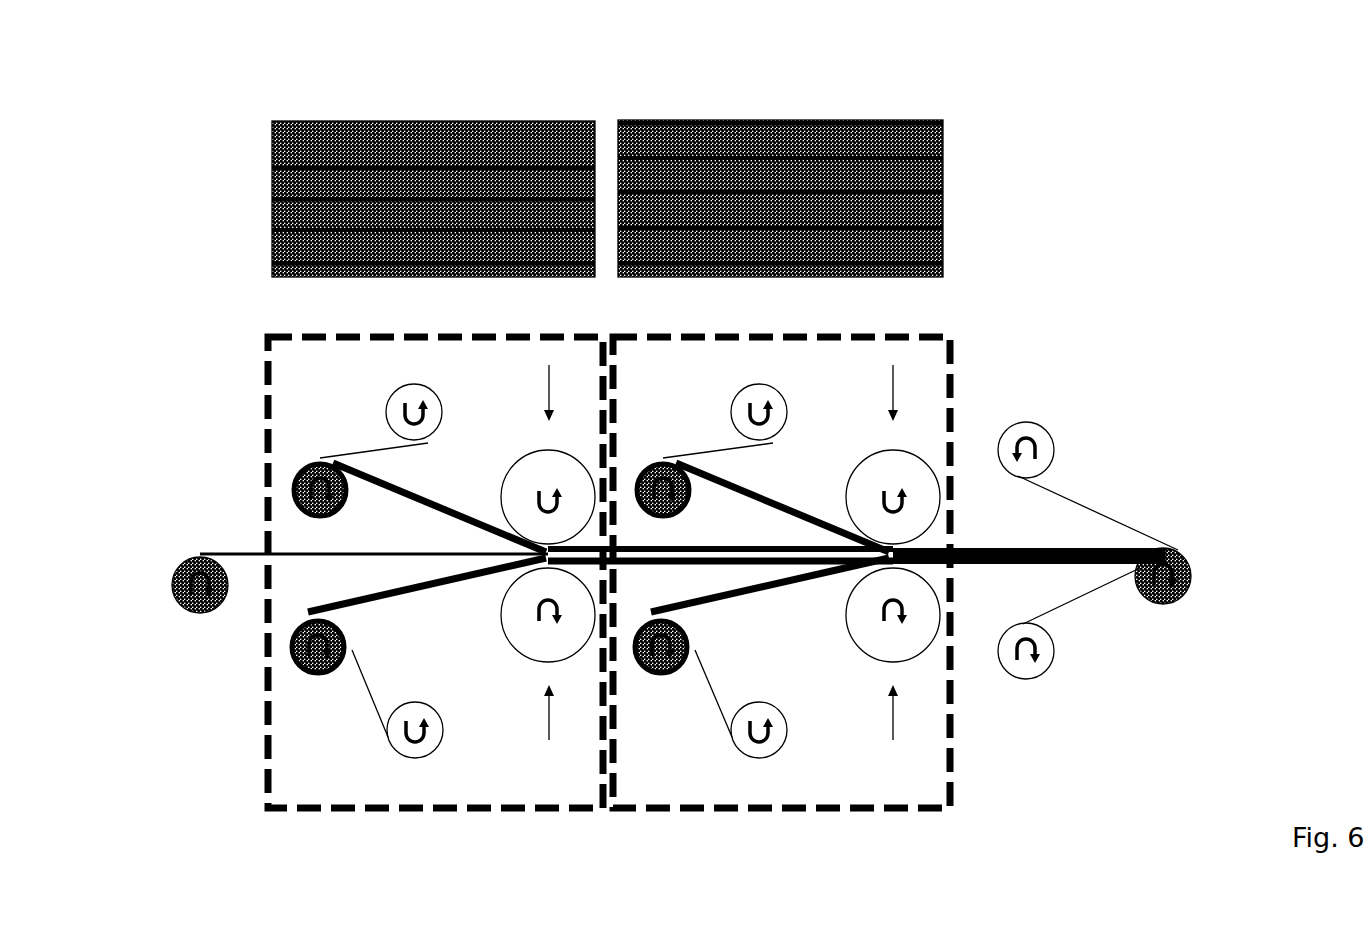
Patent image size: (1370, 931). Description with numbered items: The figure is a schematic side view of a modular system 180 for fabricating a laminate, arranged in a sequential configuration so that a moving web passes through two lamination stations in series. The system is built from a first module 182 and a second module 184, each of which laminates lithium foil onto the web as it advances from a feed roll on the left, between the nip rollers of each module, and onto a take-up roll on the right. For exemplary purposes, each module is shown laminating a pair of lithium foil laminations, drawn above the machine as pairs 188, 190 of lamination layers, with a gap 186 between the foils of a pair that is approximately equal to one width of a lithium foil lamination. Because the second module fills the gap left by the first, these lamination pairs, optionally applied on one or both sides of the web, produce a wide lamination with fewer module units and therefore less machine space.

The modular system 180 is at (1118, 92).
The module 182 is at (383, 330).
The module 184 is at (731, 330).
The gap 186 is at (375, 213).
The pair of lithium foil laminations 188 is at (275, 184).
The pair of lithium foil laminations 190 is at (943, 141).